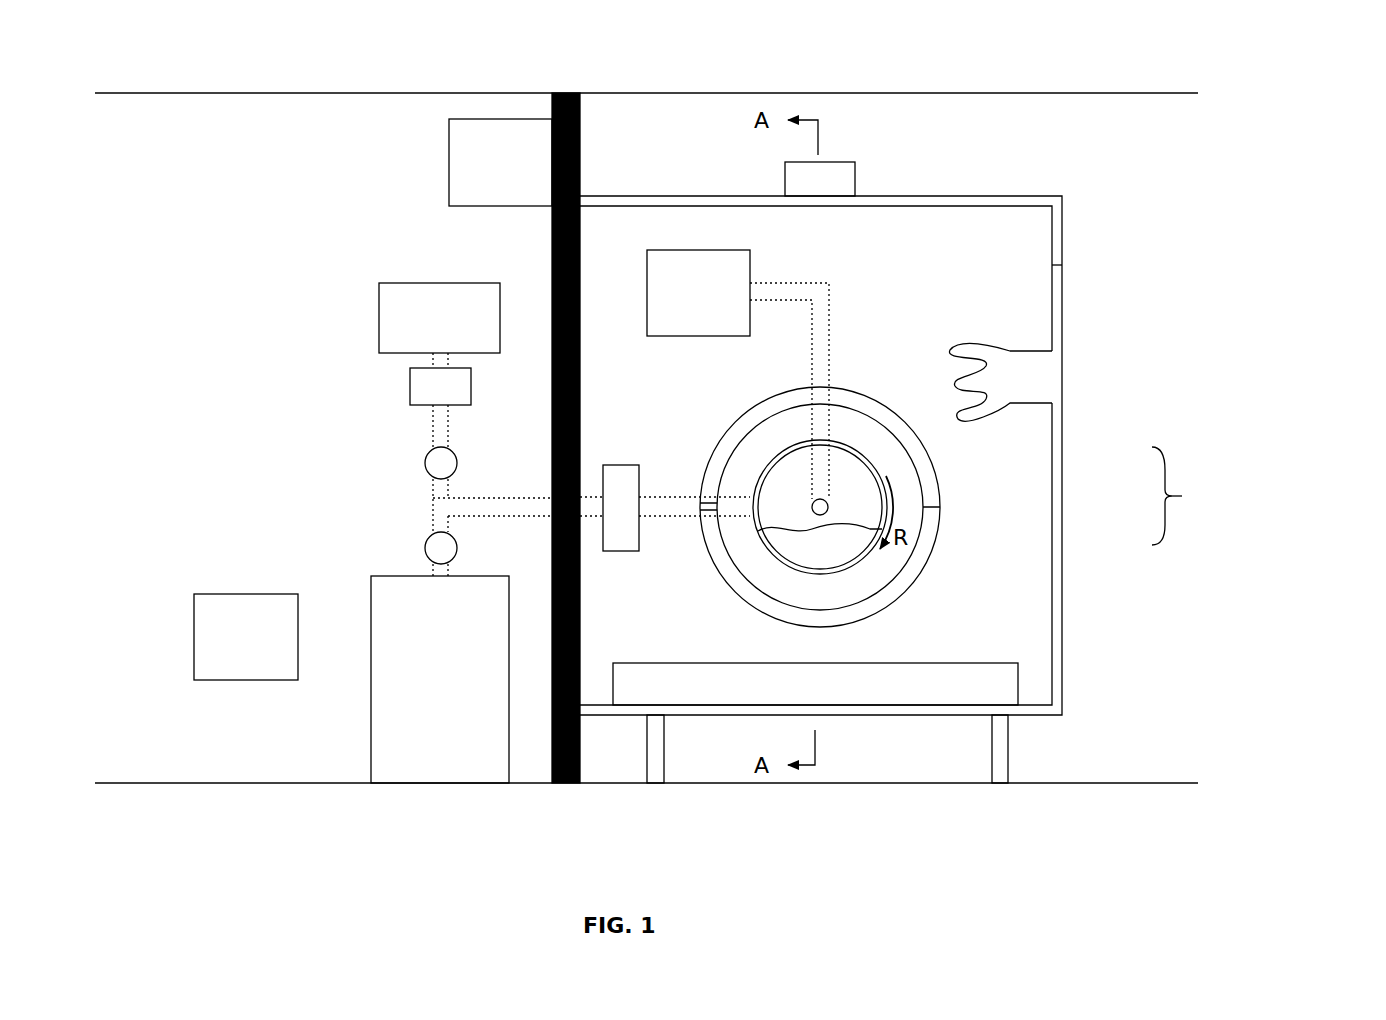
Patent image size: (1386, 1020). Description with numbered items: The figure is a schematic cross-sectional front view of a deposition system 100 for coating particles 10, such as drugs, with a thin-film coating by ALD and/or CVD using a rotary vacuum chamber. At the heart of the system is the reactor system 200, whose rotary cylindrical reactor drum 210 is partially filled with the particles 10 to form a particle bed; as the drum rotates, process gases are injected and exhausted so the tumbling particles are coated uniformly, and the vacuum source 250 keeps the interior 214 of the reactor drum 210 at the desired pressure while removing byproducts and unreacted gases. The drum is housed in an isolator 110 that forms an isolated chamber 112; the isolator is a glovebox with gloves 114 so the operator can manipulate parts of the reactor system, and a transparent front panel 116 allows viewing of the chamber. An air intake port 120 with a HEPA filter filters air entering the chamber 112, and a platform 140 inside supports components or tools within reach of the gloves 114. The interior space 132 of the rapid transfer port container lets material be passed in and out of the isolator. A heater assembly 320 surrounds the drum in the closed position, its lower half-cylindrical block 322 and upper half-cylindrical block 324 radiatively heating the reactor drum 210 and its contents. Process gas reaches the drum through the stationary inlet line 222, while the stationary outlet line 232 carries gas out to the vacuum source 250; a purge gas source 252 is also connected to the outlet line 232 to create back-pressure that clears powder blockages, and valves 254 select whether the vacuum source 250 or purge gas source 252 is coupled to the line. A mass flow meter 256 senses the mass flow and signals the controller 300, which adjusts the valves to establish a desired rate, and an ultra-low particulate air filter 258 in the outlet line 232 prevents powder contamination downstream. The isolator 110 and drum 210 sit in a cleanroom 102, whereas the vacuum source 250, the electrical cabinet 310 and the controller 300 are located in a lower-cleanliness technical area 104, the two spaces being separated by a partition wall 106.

The deposition system 100 is at (1318, 85).
The cleanroom 102 is at (1129, 162).
The technical area 104 is at (284, 250).
The partition wall 106 is at (552, 245).
The isolator 110 is at (1062, 645).
The isolated chamber 112 is at (991, 607).
The gloves 114 is at (1012, 350).
The front panel 116 is at (1062, 300).
The air intake port 120 is at (855, 178).
The interior space 132 is at (698, 293).
The platform 140 is at (888, 663).
The particles 10 is at (810, 550).
The reactor system 200 is at (370, 472).
The reactor drum 210 is at (845, 447).
The interior of the reactor drum 214 is at (790, 478).
The stationary inlet line 222 is at (829, 318).
The stationary outlet line 232 is at (667, 512).
The vacuum source 250 is at (440, 679).
The purge gas source 252 is at (439, 318).
The valves 254 is at (427, 550).
The mass flow meter 256 is at (430, 385).
The ultra-low particulate air filter 258 is at (623, 478).
The controller 300 is at (246, 637).
The electrical cabinet 310 is at (500, 162).
The heater assembly 320 is at (1192, 496).
The lower half-cylindrical block 322 is at (928, 530).
The upper half-cylindrical block 324 is at (928, 490).